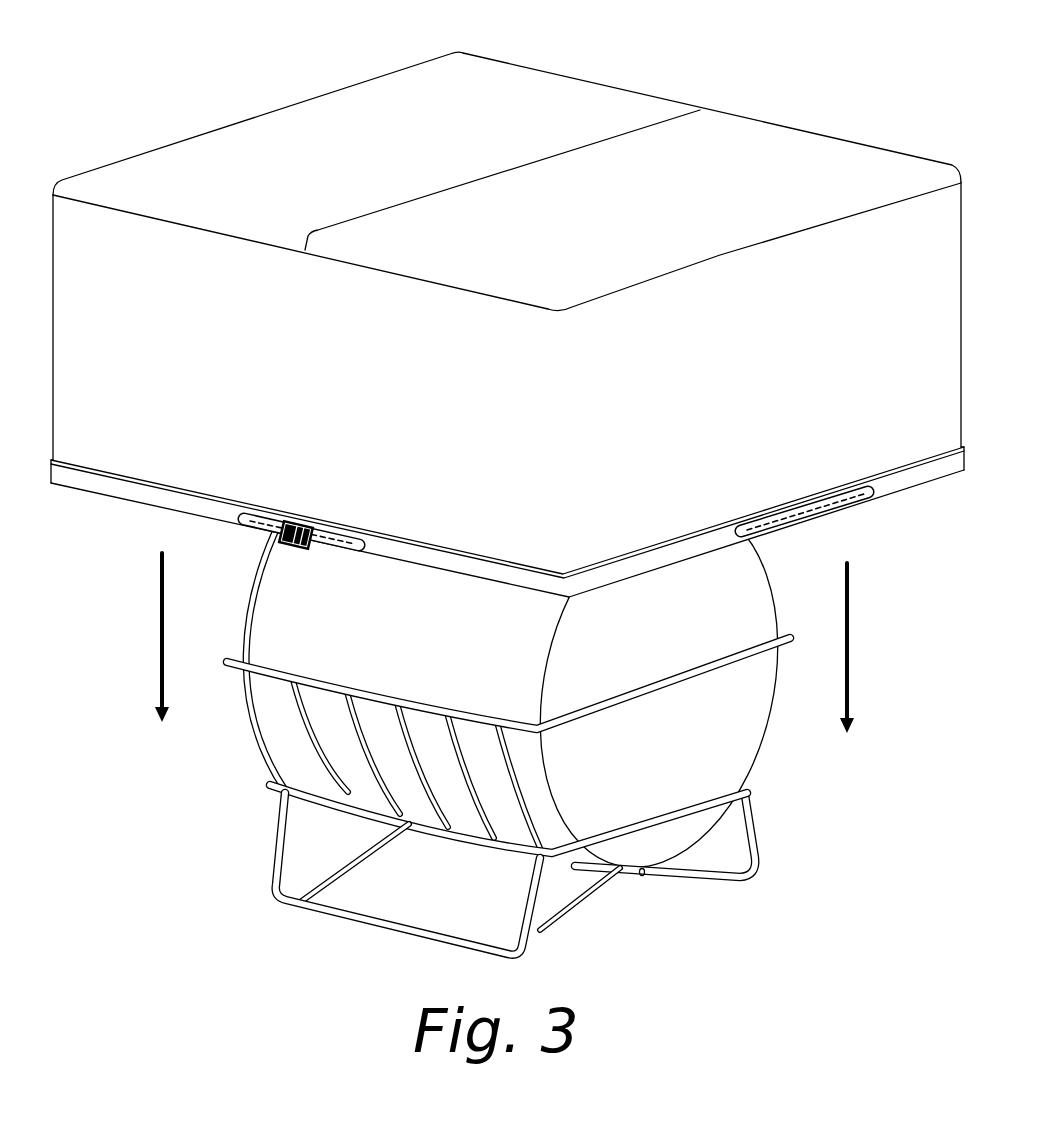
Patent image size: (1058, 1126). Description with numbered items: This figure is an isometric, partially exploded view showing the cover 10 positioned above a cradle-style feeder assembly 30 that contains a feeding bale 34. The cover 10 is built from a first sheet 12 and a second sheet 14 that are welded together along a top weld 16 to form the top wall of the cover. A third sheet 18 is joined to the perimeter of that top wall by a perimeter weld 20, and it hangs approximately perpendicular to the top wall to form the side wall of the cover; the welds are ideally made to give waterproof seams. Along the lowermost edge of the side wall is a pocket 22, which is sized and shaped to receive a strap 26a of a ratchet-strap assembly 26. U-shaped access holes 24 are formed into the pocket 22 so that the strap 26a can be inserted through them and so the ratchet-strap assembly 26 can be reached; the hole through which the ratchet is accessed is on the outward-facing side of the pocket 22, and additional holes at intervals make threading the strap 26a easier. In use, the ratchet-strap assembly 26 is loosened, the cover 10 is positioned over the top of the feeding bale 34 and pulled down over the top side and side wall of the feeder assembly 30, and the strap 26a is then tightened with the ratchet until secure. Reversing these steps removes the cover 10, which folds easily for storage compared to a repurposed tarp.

The cover 10 is at (111, 30).
The first sheet 12 is at (417, 88).
The second sheet 14 is at (778, 150).
The top weld 16 is at (665, 118).
The third sheet 18 is at (102, 442).
The perimeter weld 20 is at (210, 232).
The pocket 22 is at (145, 495).
The access holes 24 is at (240, 510).
The ratchet-strap assembly 26 is at (303, 518).
The strap 26a is at (263, 523).
The cradle-style feeder assembly 30 is at (278, 815).
The feeding bale 34 is at (738, 750).